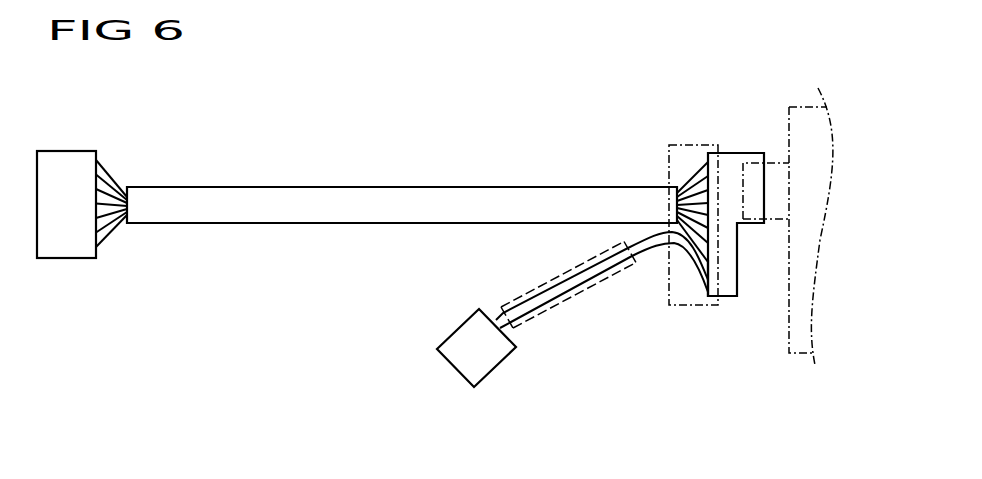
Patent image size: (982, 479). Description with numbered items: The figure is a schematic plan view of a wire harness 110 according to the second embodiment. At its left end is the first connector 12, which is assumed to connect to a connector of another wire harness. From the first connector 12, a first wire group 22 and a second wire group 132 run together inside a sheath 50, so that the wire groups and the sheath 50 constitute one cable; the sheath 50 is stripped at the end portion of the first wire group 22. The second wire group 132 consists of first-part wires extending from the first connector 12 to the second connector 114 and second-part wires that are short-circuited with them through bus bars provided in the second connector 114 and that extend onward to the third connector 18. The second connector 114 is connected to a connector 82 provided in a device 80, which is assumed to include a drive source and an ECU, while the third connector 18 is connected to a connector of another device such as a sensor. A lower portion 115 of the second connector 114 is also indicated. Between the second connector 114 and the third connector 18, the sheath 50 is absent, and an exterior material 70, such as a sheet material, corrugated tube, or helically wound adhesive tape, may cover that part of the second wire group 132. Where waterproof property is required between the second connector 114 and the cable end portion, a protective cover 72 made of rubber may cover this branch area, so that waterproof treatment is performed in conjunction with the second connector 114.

The first connector 12 is at (55, 245).
The sheath 50 is at (362, 223).
The wire harness 110 is at (373, 133).
The first wire group 22 is at (118, 200).
The second wire group 132 is at (118, 226).
The second connector 114 is at (736, 139).
The connector lower portion 115 is at (727, 288).
The protective cover 72 is at (691, 305).
The connector 82 is at (776, 224).
The device 80 is at (790, 353).
The third connector 18 is at (486, 365).
The exterior material 70 is at (562, 298).